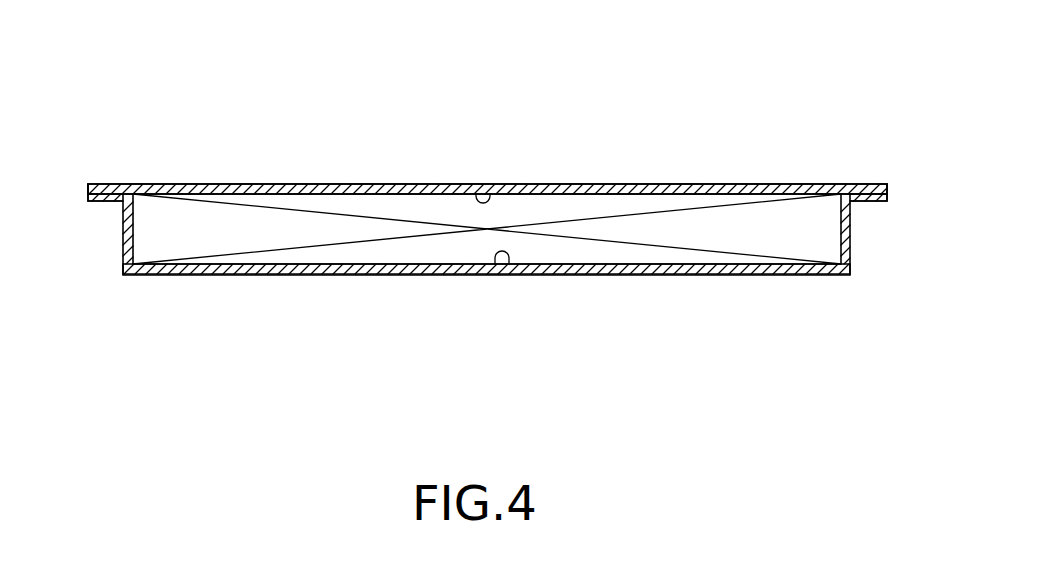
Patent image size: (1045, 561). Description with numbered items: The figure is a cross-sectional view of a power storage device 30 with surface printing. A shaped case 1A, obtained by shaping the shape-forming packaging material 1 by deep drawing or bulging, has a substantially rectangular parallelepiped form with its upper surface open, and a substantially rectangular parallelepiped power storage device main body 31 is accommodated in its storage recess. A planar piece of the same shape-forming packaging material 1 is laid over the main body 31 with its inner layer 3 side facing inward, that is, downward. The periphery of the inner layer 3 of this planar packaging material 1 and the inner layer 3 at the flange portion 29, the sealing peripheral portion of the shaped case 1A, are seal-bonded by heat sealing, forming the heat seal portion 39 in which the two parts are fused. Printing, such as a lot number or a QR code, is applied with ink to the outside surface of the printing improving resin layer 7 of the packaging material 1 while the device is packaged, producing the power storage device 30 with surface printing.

The power storage device with surface printing 30 is at (734, 68).
The shape-forming packaging material 1 is at (395, 193).
The shaped case 1A is at (382, 272).
The printing improving resin layer 7 is at (250, 184).
The inner layer 3 is at (491, 195).
The flange portion 29 is at (102, 198).
The heat seal portion 39 is at (110, 183).
The power storage device main body 31 is at (603, 230).